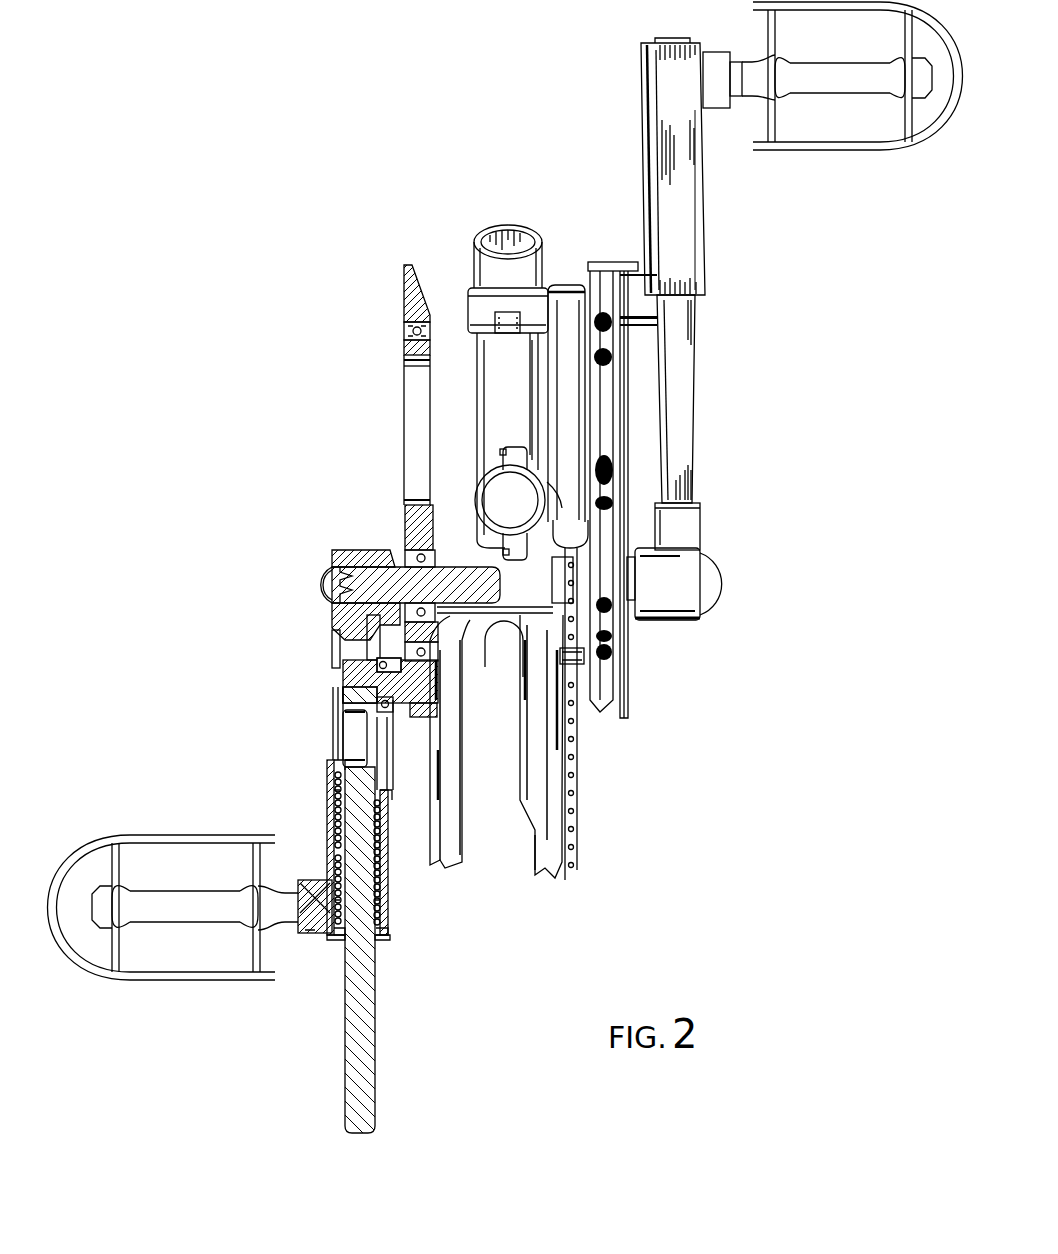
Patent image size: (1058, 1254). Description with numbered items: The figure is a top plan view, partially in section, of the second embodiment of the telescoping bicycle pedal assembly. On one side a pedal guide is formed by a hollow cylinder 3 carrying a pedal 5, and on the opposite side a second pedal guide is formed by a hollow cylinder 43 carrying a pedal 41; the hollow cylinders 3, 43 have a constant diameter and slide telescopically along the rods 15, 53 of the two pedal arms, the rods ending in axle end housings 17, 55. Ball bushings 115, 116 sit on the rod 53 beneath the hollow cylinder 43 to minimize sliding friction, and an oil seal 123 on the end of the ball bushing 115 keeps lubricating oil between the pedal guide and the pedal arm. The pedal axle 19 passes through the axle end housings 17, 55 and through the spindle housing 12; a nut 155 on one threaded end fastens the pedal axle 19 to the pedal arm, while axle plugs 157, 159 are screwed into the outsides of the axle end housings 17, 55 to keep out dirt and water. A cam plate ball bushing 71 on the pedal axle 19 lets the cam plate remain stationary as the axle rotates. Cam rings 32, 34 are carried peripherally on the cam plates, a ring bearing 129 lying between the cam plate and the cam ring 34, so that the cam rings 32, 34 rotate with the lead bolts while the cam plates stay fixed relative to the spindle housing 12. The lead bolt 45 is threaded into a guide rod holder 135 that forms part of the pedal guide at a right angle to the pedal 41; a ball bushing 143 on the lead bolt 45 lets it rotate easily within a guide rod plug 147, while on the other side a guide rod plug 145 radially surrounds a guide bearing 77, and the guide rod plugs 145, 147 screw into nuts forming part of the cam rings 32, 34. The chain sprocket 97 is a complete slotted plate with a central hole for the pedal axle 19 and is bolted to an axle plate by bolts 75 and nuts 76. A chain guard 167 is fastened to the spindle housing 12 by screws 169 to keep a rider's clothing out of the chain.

The hollow cylinder 3 is at (643, 160).
The pedal 5 is at (813, 150).
The spindle housing 12 is at (502, 620).
The rod 15 is at (692, 400).
The axle end housing 17 is at (702, 620).
The pedal axle 19 is at (352, 580).
The cam ring 32 is at (627, 675).
The cam ring 34 is at (403, 283).
The pedal 41 is at (196, 834).
The hollow cylinder 43 is at (387, 917).
The lead bolt 45 is at (343, 682).
The rod 53 is at (342, 1050).
The axle end housing 55 is at (360, 552).
The cam plate ball bushing 71 is at (408, 540).
The bolt 75 is at (553, 643).
The nut 76 is at (578, 656).
The guide bearing 77 is at (380, 700).
The chain sprocket 97 is at (575, 810).
The ball bushing 115 is at (330, 762).
The ball bushing 116 is at (328, 803).
The oil seal 123 is at (390, 940).
The ring bearing 129 is at (403, 328).
The guide rod holder 135 is at (370, 722).
The ball bushing 143 is at (440, 707).
The guide rod plug 145 is at (628, 262).
The guide rod plug 147 is at (395, 718).
The nut 155 is at (362, 612).
The axle plug 157 is at (715, 583).
The axle plug 159 is at (317, 588).
The chain guard 167 is at (570, 285).
The screw 169 is at (503, 452).